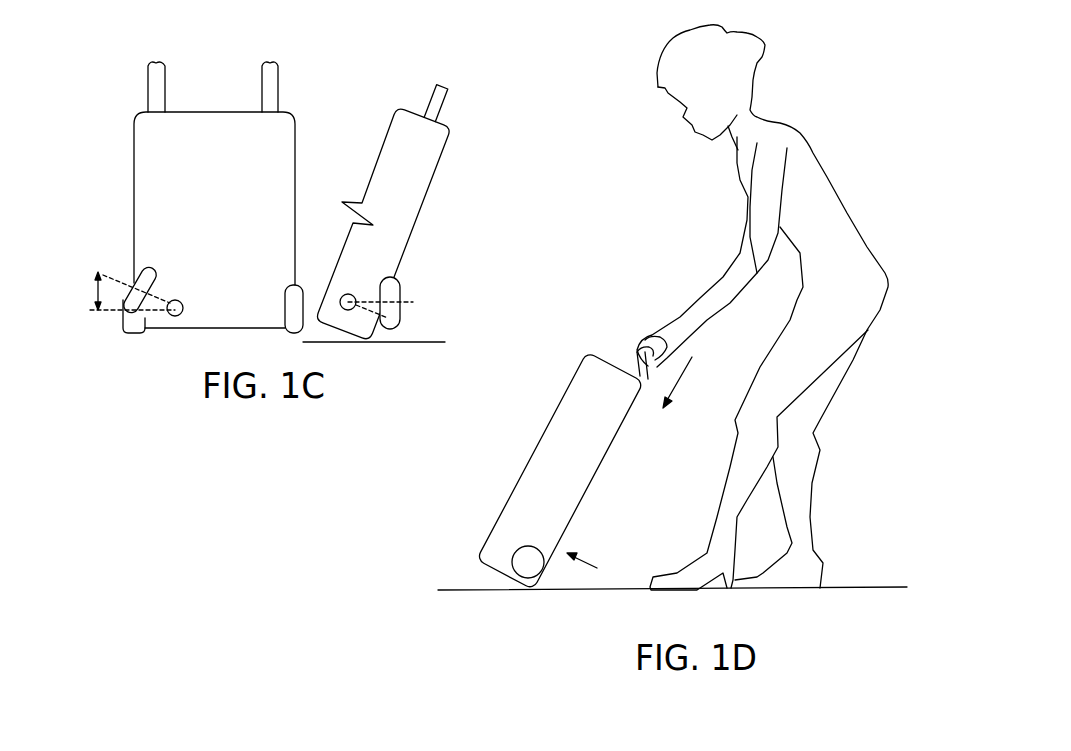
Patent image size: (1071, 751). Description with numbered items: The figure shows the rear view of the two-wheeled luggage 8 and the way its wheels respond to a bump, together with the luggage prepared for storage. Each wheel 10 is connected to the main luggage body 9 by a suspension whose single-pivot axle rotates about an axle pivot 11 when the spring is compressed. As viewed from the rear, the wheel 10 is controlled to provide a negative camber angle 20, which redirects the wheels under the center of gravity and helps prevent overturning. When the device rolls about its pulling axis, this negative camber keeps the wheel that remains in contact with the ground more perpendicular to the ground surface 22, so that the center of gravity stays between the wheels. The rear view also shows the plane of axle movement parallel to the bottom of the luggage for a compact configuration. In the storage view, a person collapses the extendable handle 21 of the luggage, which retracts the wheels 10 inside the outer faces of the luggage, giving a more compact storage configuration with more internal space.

In FIG. 1D, the two-wheeled luggage 8 is at (537, 455).
In FIG. 1C, the main luggage body 9 is at (297, 153).
In FIG. 1D, the main luggage body 9 is at (528, 455).
In FIG. 1C, the wheel 10 is at (148, 266).
In FIG. 1D, the wheel 10 is at (512, 557).
In FIG. 1C, the axle pivot 11 is at (180, 302).
In FIG. 1C, the negative camber angle 20 is at (97, 280).
In FIG. 1C, the handle 21 is at (279, 83).
In FIG. 1D, the handle 21 is at (638, 368).
In FIG. 1C, the ground surface 22 is at (424, 342).